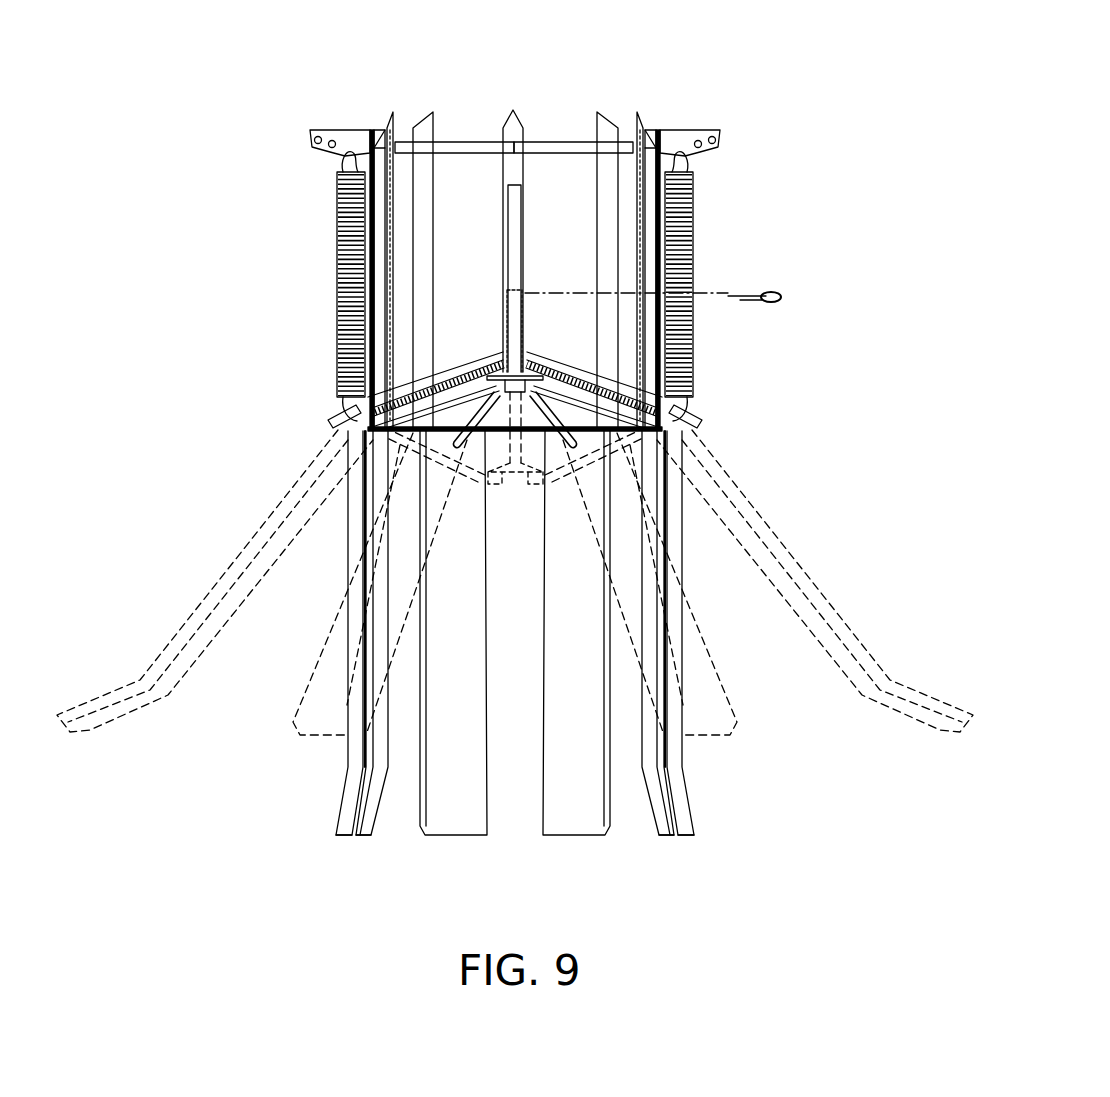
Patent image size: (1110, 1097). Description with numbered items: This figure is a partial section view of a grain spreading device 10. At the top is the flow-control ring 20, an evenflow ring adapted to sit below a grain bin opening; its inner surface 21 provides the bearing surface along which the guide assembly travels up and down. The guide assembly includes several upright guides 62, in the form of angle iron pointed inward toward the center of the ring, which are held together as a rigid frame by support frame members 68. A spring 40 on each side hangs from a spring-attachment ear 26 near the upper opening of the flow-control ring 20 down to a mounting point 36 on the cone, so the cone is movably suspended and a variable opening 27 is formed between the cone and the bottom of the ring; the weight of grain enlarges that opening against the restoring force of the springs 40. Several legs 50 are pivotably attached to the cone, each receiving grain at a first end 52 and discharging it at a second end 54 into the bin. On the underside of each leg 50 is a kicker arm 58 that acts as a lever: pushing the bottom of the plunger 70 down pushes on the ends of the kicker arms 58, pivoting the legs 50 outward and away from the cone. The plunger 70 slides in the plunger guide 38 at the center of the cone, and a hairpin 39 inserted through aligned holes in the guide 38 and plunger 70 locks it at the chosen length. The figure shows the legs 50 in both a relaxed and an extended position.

The grain spreading device 10 is at (709, 38).
The flow-control ring 20 is at (476, 165).
The inner surface 21 is at (561, 165).
The spring-attachment ear 26 is at (335, 130).
The variable opening 27 is at (368, 402).
The mounting point 36 is at (336, 418).
The plunger guide 38 is at (508, 296).
The hairpin 39 is at (775, 292).
The spring 40 is at (336, 350).
The leg 50 is at (566, 640).
The first end 52 is at (324, 438).
The second end 54 is at (497, 834).
The kicker arm 58 is at (470, 386).
The upright guide 62 is at (428, 128).
The support frame member 68 is at (579, 150).
The plunger 70 is at (521, 310).